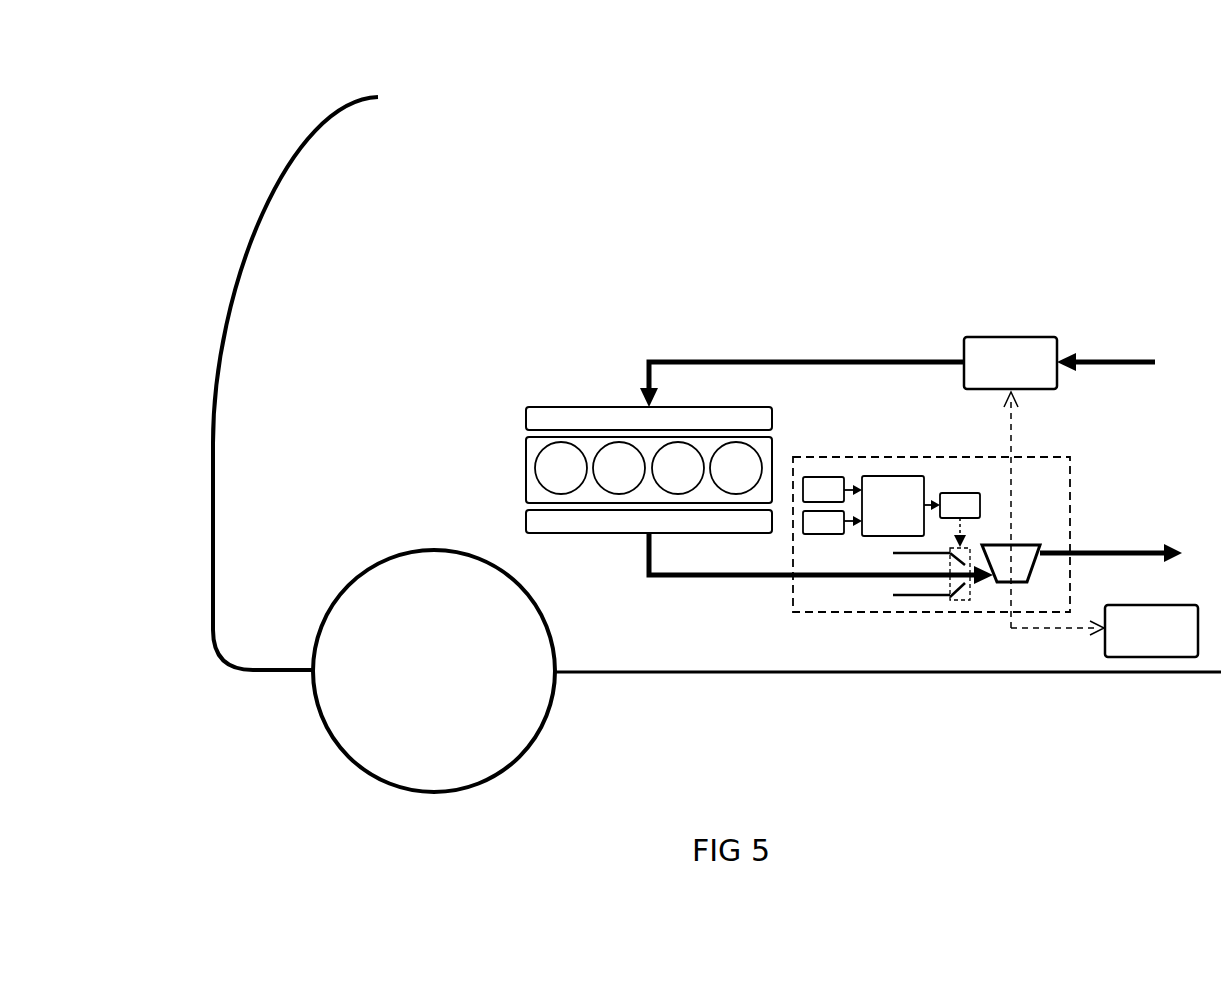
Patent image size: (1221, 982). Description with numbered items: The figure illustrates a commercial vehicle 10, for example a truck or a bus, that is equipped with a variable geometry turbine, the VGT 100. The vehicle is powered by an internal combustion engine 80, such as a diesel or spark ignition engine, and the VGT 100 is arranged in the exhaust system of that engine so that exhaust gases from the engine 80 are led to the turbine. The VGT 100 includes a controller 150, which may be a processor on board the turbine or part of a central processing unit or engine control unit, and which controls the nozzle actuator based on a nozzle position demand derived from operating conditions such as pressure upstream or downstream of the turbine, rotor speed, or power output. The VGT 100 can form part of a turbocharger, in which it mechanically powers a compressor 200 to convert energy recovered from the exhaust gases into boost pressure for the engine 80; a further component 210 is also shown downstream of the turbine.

The commercial vehicle 10 is at (233, 78).
The internal combustion engine 80 is at (506, 413).
The VGT 100 is at (987, 513).
The controller 150 is at (893, 506).
The compressor 200 is at (1010, 363).
The exhaust component 210 is at (1151, 631).